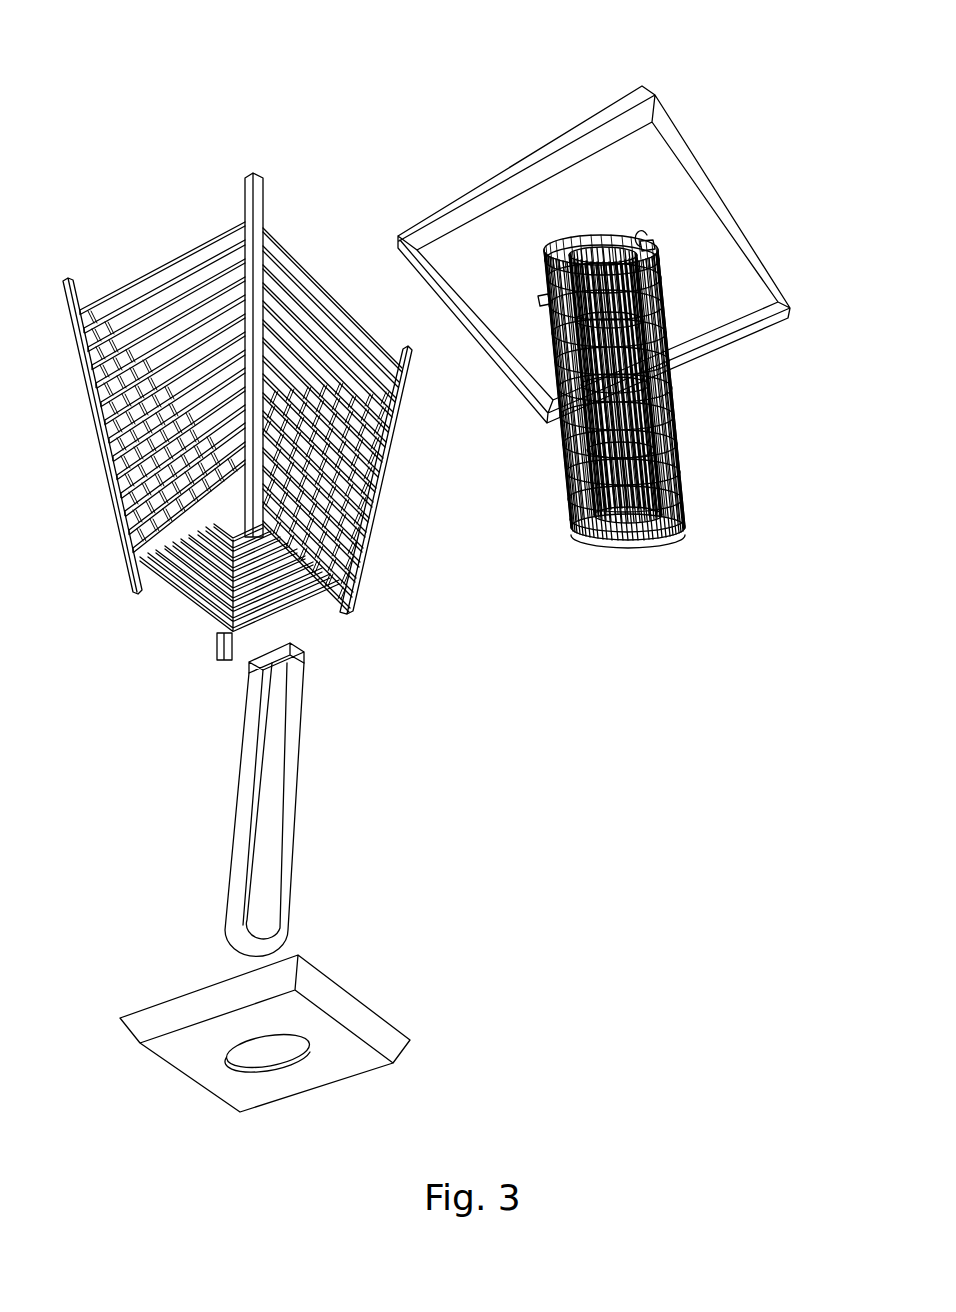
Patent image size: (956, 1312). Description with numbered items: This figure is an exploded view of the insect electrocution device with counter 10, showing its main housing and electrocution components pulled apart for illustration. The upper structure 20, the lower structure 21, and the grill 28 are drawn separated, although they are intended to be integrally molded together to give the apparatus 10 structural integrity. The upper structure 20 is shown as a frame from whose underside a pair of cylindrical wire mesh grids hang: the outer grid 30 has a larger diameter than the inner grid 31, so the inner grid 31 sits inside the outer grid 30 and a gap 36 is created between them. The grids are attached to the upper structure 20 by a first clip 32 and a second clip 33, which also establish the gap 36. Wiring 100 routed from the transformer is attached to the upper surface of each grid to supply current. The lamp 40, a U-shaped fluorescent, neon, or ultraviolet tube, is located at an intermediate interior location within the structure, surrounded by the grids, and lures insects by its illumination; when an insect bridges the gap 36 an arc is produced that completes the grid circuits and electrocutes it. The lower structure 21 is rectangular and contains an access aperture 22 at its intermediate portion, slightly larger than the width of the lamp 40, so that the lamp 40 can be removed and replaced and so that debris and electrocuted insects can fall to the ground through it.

The insect electrocution device with counter 10 is at (136, 103).
The upper structure 20 is at (575, 130).
The lower structure 21 is at (347, 1012).
The access aperture 22 is at (287, 1068).
The grill 28 is at (192, 250).
The outer grid 30 is at (685, 512).
The inner grid 31 is at (657, 538).
The first clip 32 is at (540, 298).
The second clip 33 is at (653, 243).
The gap 36 is at (607, 547).
The lamp 40 is at (288, 793).
The wiring 100 is at (639, 233).